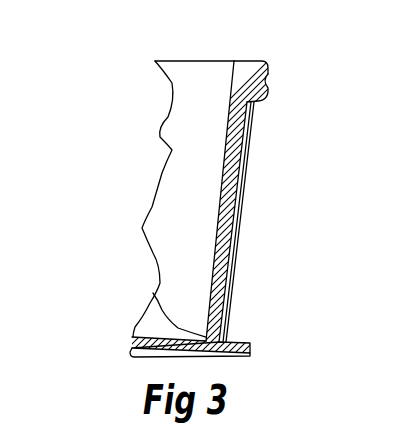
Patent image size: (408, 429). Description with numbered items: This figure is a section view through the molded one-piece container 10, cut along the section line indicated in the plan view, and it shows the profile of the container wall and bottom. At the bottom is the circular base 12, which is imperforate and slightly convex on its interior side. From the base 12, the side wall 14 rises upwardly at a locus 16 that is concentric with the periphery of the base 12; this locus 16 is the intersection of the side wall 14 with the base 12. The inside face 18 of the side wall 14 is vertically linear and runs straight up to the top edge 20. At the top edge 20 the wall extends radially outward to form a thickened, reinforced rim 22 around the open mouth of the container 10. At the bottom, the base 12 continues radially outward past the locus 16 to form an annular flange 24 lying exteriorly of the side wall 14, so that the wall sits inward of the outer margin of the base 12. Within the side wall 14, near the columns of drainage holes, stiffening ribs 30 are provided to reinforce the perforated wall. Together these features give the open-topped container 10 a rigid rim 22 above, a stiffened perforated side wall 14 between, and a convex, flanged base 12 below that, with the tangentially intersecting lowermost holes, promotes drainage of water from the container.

The container 10 is at (134, 208).
The base 12 is at (130, 338).
The side wall 14 is at (152, 258).
The locus 16 is at (153, 293).
The inside face 18 is at (232, 82).
The top edge 20 is at (246, 61).
The rim 22 is at (266, 84).
The annular flange 24 is at (247, 344).
The stiffening ribs 30 is at (251, 138).